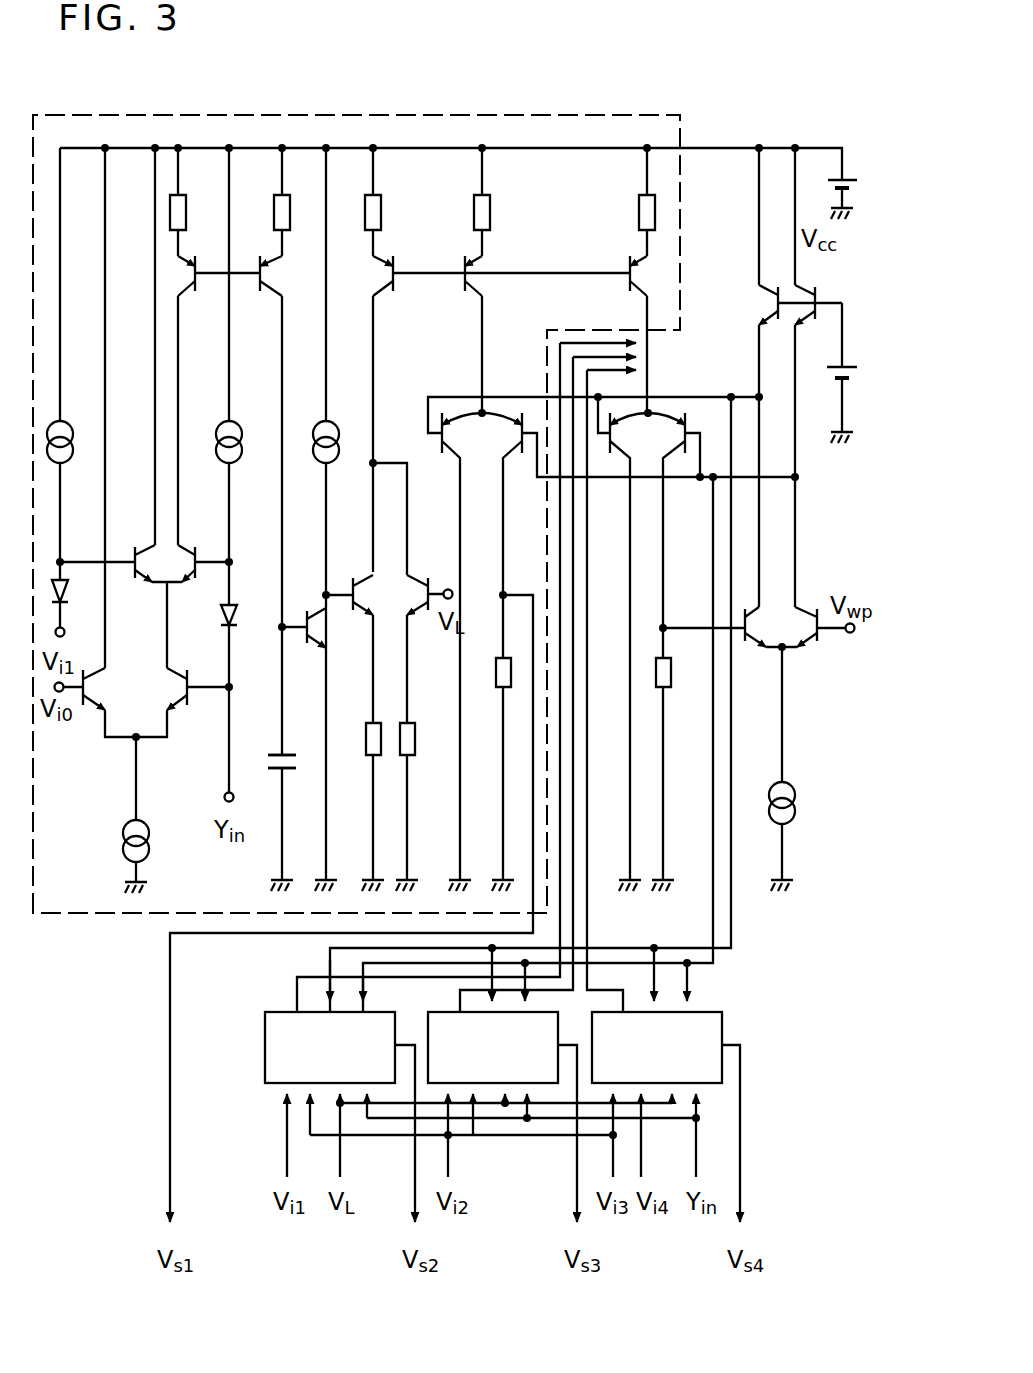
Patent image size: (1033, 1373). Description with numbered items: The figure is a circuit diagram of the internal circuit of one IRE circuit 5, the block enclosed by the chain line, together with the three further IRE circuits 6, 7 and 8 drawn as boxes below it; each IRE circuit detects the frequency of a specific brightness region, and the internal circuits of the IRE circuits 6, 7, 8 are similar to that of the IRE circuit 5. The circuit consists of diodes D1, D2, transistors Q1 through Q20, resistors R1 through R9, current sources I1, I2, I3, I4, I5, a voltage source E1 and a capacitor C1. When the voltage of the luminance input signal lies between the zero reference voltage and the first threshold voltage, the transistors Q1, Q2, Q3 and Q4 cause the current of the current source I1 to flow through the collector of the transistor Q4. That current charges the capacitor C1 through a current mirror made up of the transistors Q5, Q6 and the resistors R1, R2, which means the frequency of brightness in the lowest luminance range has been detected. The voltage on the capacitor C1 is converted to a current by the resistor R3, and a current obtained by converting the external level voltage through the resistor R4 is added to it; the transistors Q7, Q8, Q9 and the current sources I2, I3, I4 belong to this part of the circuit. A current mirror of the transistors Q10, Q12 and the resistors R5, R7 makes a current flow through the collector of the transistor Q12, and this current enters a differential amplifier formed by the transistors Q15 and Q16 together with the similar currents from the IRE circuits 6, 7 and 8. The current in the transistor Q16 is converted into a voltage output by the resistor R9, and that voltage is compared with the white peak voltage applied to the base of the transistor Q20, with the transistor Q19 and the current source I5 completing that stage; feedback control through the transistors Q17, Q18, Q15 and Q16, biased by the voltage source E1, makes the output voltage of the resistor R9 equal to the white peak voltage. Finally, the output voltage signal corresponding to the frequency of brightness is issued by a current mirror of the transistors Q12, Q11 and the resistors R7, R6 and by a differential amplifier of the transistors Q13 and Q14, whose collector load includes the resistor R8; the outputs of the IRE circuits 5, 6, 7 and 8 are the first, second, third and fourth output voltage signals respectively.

The IRE circuit 5 is at (103, 915).
The IRE circuit 6 is at (264, 1026).
The IRE circuit 7 is at (558, 1018).
The IRE circuit 8 is at (722, 1022).
The transistor Q1 is at (92, 688).
The transistor Q2 is at (205, 669).
The transistor Q3 is at (132, 556).
The transistor Q4 is at (198, 556).
The transistor Q5 is at (197, 284).
The transistor Q6 is at (264, 278).
The transistor Q7 is at (308, 640).
The transistor Q8 is at (350, 586).
The transistor Q9 is at (431, 586).
The transistor Q10 is at (396, 280).
The transistor Q11 is at (470, 280).
The transistor Q12 is at (634, 280).
The transistor Q13 is at (440, 432).
The transistor Q14 is at (528, 424).
The transistor Q15 is at (608, 455).
The transistor Q16 is at (688, 424).
The transistor Q17 is at (775, 303).
The transistor Q18 is at (828, 288).
The transistor Q19 is at (748, 643).
The transistor Q20 is at (820, 643).
The resistor R1 is at (187, 213).
The resistor R2 is at (273, 214).
The resistor R3 is at (366, 752).
The resistor R4 is at (415, 745).
The resistor R5 is at (382, 214).
The resistor R6 is at (474, 214).
The resistor R7 is at (639, 214).
The resistor R8 is at (496, 688).
The resistor R9 is at (671, 680).
The diode D1 is at (64, 578).
The diode D2 is at (236, 610).
The capacitor C1 is at (272, 752).
The voltage source E1 is at (848, 382).
The current source I1 is at (150, 834).
The current source I2 is at (68, 432).
The current source I3 is at (238, 432).
The current source I4 is at (335, 432).
The current source I5 is at (793, 792).